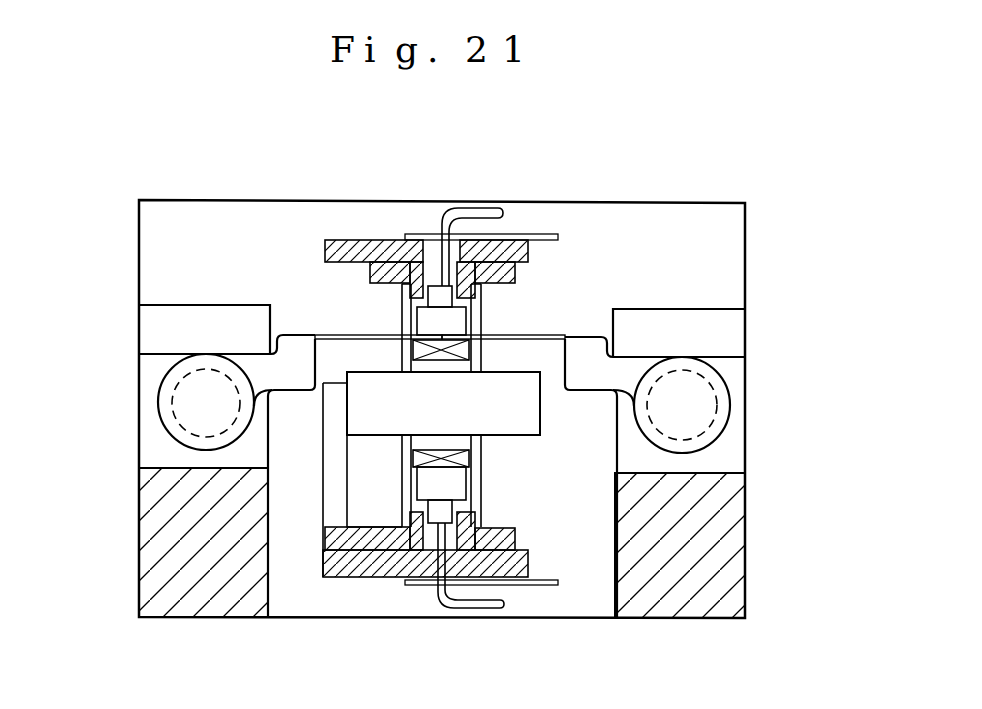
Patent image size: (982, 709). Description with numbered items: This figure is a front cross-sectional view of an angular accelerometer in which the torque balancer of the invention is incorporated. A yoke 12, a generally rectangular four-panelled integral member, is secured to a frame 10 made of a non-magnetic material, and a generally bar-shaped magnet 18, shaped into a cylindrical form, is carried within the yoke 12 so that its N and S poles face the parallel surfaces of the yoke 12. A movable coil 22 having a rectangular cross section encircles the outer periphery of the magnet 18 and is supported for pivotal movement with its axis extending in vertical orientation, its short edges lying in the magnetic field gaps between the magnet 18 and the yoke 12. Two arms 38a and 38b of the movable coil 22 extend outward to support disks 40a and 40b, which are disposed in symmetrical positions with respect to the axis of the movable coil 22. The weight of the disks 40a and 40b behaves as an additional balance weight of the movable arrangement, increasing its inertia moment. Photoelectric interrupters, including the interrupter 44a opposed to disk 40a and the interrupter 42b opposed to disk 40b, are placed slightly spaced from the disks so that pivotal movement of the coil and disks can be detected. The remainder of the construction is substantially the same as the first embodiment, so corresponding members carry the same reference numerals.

The frame 10 is at (750, 550).
The yoke 12 is at (515, 240).
The magnet 18 is at (530, 417).
The movable coil 22 is at (468, 458).
The arm 38a is at (537, 335).
The arm 38b is at (327, 333).
The disk 40a is at (712, 364).
The disk 40b is at (157, 385).
The photoelectric interrupter 42b is at (187, 433).
The photoelectric interrupter 44a is at (717, 397).